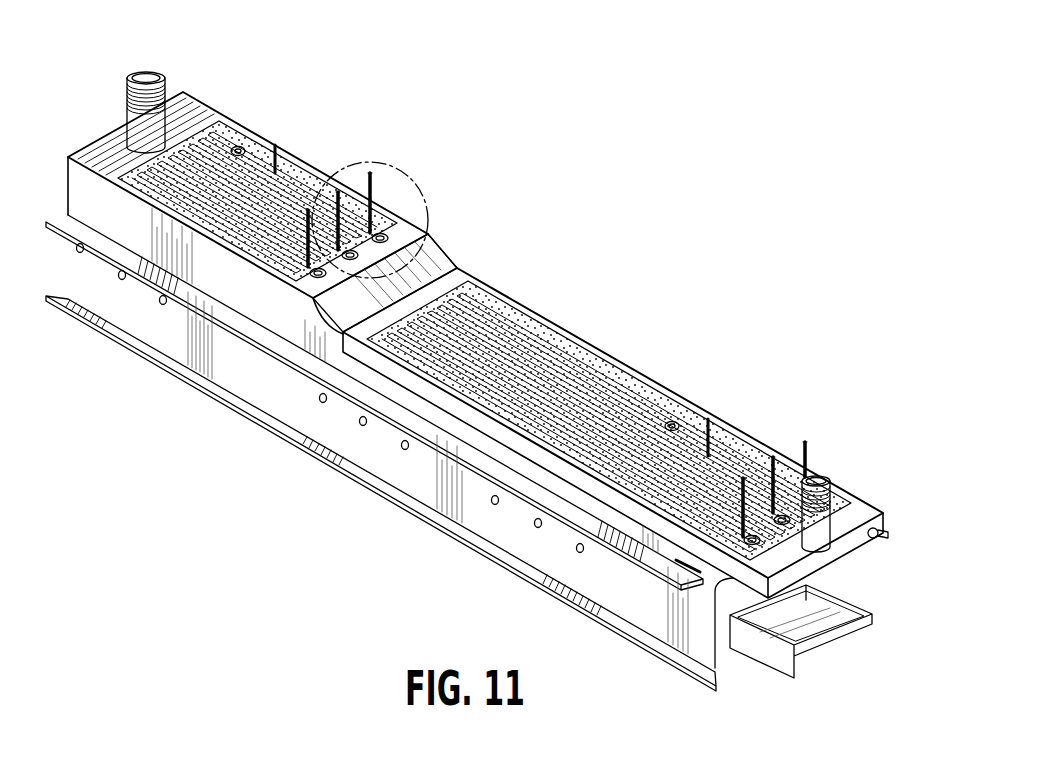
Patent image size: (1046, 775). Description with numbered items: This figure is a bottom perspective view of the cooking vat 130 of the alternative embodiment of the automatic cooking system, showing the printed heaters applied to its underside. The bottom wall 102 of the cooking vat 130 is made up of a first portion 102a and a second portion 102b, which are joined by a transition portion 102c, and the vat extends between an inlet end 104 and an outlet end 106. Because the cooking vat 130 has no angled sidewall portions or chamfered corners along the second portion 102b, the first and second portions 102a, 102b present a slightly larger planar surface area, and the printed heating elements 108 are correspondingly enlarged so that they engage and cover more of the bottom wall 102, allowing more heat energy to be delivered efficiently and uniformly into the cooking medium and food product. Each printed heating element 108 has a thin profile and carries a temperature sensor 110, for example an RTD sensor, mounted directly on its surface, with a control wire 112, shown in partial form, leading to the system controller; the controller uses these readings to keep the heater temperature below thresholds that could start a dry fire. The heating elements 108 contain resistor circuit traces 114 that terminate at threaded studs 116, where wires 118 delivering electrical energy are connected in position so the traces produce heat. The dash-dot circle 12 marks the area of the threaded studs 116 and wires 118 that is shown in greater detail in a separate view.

The detail view indicator 12 is at (432, 195).
The bottom wall 102 is at (460, 262).
The first portion 102a is at (868, 513).
The second portion 102b is at (197, 100).
The transition portion 102c is at (434, 262).
The inlet end 104 is at (736, 588).
The outlet end 106 is at (62, 268).
The printed heating elements 108 is at (296, 164).
The temperature sensor 110 is at (238, 146).
The control wire 112 is at (275, 144).
The resistor circuit traces 114 is at (150, 168).
The threaded studs 116 is at (310, 271).
The wires 118 is at (340, 190).
The cooking vat 130 is at (287, 446).